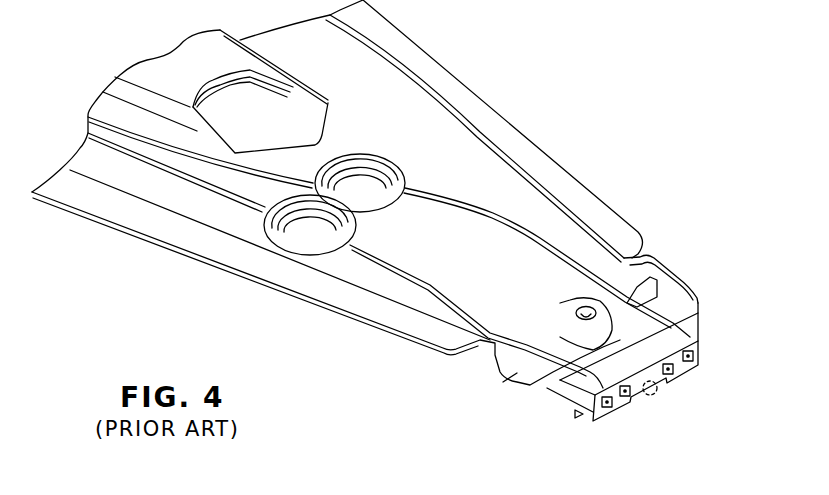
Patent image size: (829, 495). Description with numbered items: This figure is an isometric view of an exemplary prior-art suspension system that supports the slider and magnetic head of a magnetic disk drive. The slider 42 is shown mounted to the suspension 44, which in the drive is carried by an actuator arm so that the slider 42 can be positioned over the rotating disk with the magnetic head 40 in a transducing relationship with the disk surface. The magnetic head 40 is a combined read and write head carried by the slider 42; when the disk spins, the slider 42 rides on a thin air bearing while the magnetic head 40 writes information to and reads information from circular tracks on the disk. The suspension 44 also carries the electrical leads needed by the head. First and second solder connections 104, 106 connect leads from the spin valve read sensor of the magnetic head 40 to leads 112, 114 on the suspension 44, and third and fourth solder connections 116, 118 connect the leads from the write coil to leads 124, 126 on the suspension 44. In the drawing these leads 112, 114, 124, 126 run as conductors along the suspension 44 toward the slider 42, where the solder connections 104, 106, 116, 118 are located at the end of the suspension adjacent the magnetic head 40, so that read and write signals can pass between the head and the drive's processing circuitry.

The magnetic head 40 is at (658, 395).
The slider 42 is at (545, 410).
The suspension 44 is at (502, 115).
The first solder connection 104 is at (595, 410).
The second solder connection 106 is at (692, 353).
The lead 112 is at (377, 263).
The lead 114 is at (560, 250).
The third solder connection 116 is at (620, 400).
The fourth solder connection 118 is at (673, 375).
The lead 124 is at (425, 282).
The lead 126 is at (478, 212).